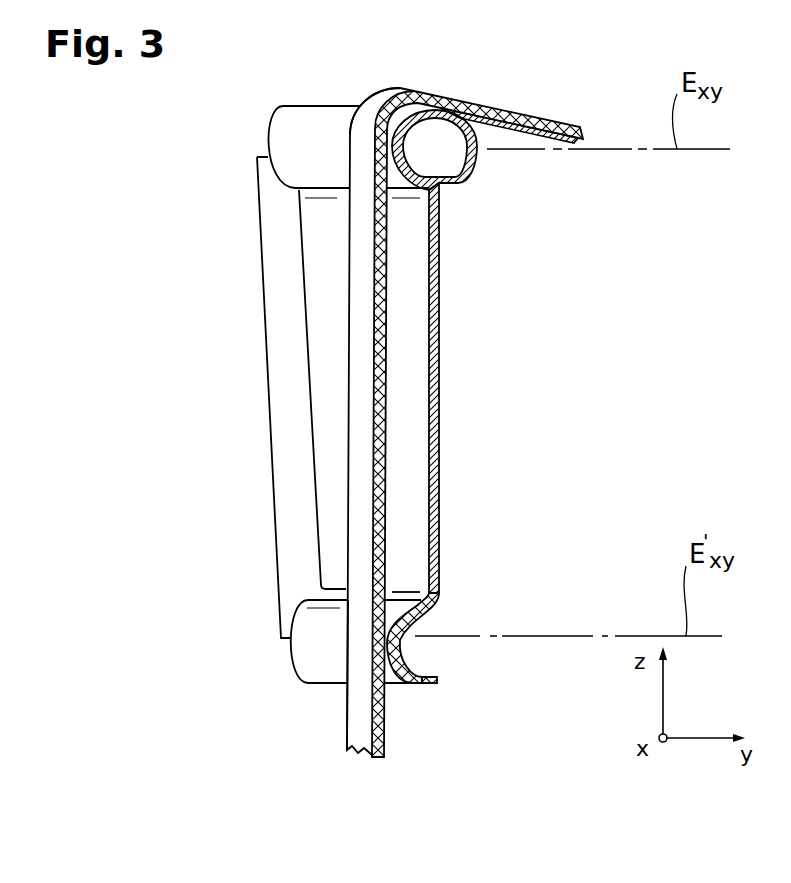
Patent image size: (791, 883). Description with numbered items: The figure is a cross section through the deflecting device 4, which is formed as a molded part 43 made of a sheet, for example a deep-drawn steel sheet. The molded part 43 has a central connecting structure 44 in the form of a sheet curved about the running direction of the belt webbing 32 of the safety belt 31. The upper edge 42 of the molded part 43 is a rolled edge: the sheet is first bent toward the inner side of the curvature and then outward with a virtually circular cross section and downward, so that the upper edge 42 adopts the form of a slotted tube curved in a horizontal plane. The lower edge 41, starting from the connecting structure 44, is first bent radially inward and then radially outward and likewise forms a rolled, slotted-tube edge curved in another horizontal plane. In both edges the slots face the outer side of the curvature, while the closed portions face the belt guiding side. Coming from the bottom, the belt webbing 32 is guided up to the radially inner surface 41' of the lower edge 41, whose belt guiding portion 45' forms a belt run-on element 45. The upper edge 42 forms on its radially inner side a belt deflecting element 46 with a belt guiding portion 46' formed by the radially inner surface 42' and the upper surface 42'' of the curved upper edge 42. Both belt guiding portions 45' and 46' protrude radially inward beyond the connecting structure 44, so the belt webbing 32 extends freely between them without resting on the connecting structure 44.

The deflecting device 4 is at (482, 389).
The safety belt 31 is at (343, 721).
The belt webbing 32 is at (362, 418).
The lower edge 41 is at (456, 719).
The radially inner surface 41' is at (300, 654).
The upper edge 42 is at (503, 168).
The radially inner surface 42' is at (300, 141).
The upper surface 42'' is at (387, 76).
The molded part 43 is at (448, 494).
The central connecting structure 44 is at (436, 314).
The belt run-on element 45 is at (321, 721).
The belt guiding portion 45' is at (463, 644).
The belt deflecting element 46 is at (308, 57).
The belt guiding portion 46' is at (509, 99).